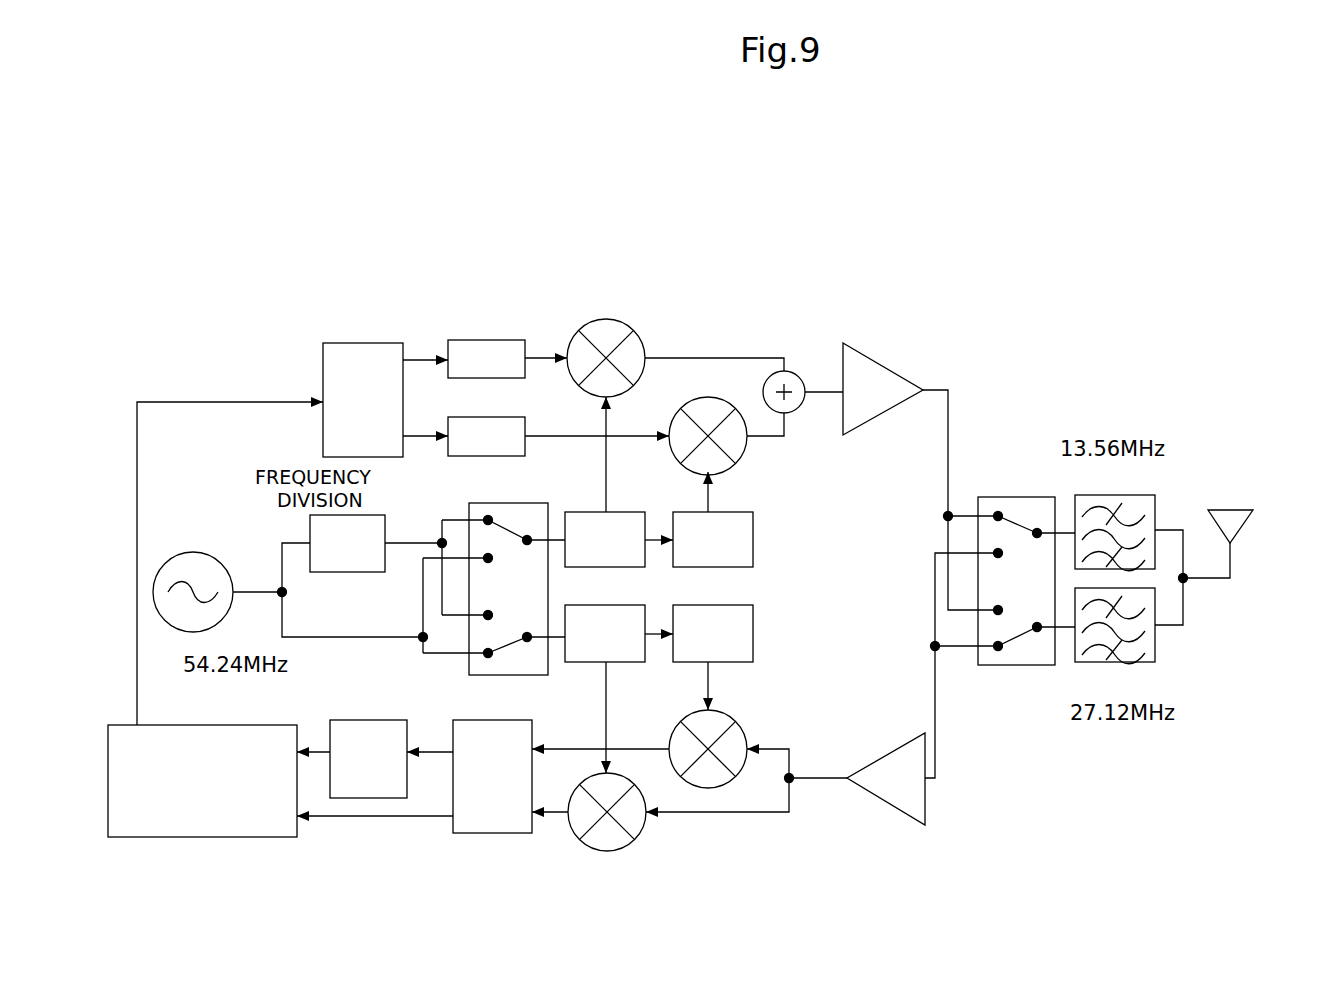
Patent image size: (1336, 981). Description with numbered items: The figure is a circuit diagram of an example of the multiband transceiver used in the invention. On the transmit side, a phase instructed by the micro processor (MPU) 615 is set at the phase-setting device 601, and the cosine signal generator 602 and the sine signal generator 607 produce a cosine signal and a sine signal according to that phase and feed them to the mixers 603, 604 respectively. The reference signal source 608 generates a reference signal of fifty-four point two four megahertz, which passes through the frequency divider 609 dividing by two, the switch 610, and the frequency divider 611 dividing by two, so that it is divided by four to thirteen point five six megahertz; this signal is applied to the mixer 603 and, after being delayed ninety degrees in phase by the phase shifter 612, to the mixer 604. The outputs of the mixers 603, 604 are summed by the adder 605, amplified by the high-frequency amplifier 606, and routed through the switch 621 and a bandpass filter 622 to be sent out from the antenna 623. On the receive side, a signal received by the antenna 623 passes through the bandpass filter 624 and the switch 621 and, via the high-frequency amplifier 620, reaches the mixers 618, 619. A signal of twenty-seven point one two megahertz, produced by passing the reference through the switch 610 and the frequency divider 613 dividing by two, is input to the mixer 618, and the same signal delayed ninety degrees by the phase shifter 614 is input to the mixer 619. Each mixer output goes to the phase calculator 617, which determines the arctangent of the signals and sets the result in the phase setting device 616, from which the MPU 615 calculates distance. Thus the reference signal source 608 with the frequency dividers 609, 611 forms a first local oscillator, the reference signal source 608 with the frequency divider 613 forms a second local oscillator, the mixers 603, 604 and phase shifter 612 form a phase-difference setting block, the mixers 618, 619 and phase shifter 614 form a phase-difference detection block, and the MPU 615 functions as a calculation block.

The phase-setting device 601 is at (355, 343).
The cosine signal generator 602 is at (467, 340).
The mixer 603 is at (617, 322).
The mixer 604 is at (740, 460).
The adder 605 is at (791, 372).
The high-frequency amplifier 606 is at (872, 357).
The sine signal generator 607 is at (510, 410).
The reference signal source 608 is at (193, 552).
The frequency divider 609 is at (373, 515).
The switch 610 is at (493, 503).
The frequency divider 611 is at (580, 512).
The phase shifter 612 is at (753, 535).
The frequency divider 613 is at (590, 605).
The phase shifter 614 is at (722, 605).
The micro processor (MPU) 615 is at (230, 725).
The phase setting device 616 is at (372, 720).
The phase calculator 617 is at (490, 720).
The mixer 618 is at (630, 848).
The mixer 619 is at (730, 720).
The high-frequency amplifier 620 is at (860, 755).
The switch 621 is at (1000, 497).
The bandpass filter 622 is at (1126, 496).
The antenna 623 is at (1232, 540).
The bandpass filter 624 is at (1155, 640).